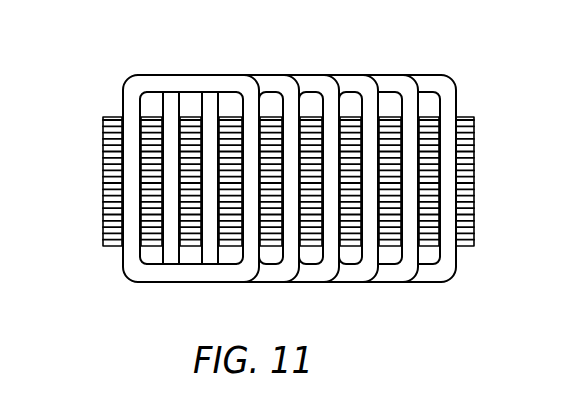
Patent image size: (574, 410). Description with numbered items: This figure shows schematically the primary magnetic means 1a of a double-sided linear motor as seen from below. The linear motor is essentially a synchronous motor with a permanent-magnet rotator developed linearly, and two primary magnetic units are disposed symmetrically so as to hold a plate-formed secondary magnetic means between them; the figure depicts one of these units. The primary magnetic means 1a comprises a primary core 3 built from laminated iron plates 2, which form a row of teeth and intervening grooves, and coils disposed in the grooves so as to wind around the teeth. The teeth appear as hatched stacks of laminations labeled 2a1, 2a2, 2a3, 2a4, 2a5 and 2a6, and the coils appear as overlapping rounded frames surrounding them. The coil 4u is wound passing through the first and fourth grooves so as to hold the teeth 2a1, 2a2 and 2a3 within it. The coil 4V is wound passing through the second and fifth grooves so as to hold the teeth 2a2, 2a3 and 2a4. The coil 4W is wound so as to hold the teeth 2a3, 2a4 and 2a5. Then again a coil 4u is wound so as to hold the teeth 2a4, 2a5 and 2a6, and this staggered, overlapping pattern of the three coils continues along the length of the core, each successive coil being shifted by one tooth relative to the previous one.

The primary magnetic means 1a is at (119, 78).
The laminated iron plates 2 is at (474, 121).
The primary core 3 is at (472, 117).
The tooth 2a1 is at (143, 250).
The tooth 2a2 is at (185, 250).
The tooth 2a3 is at (226, 250).
The tooth 2a4 is at (268, 250).
The tooth 2a5 is at (313, 126).
The tooth 2a6 is at (347, 126).
The coil 4u is at (342, 79).
The coil 4V is at (385, 272).
The coil 4W is at (330, 88).